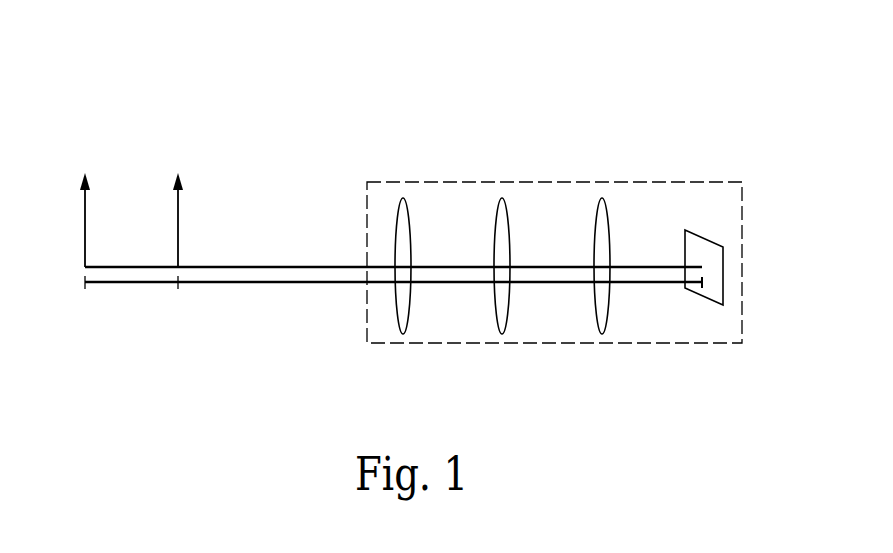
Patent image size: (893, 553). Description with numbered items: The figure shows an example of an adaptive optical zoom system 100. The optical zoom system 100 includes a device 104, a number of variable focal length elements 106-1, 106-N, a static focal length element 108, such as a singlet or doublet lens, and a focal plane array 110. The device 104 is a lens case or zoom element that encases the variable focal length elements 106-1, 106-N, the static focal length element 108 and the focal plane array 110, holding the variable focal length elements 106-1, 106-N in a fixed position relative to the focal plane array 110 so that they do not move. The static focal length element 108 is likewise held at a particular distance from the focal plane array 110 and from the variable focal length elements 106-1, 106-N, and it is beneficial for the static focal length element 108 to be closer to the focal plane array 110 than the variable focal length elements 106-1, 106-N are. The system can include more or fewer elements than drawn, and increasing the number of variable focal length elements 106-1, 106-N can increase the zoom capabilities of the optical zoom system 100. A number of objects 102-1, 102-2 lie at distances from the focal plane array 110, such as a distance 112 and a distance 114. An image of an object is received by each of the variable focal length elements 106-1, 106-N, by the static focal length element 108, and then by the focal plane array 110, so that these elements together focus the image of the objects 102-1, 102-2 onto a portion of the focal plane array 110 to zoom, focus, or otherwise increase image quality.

The adaptive optical zoom system 100 is at (737, 49).
The object 102-1 is at (84, 178).
The object 102-2 is at (177, 178).
The device 104 is at (740, 344).
The variable focal length element 106-1 is at (403, 197).
The variable focal length element 106-N is at (502, 197).
The static focal length element 108 is at (602, 197).
The focal plane array 110 is at (724, 265).
The distance 112 is at (308, 284).
The distance 114 is at (128, 284).